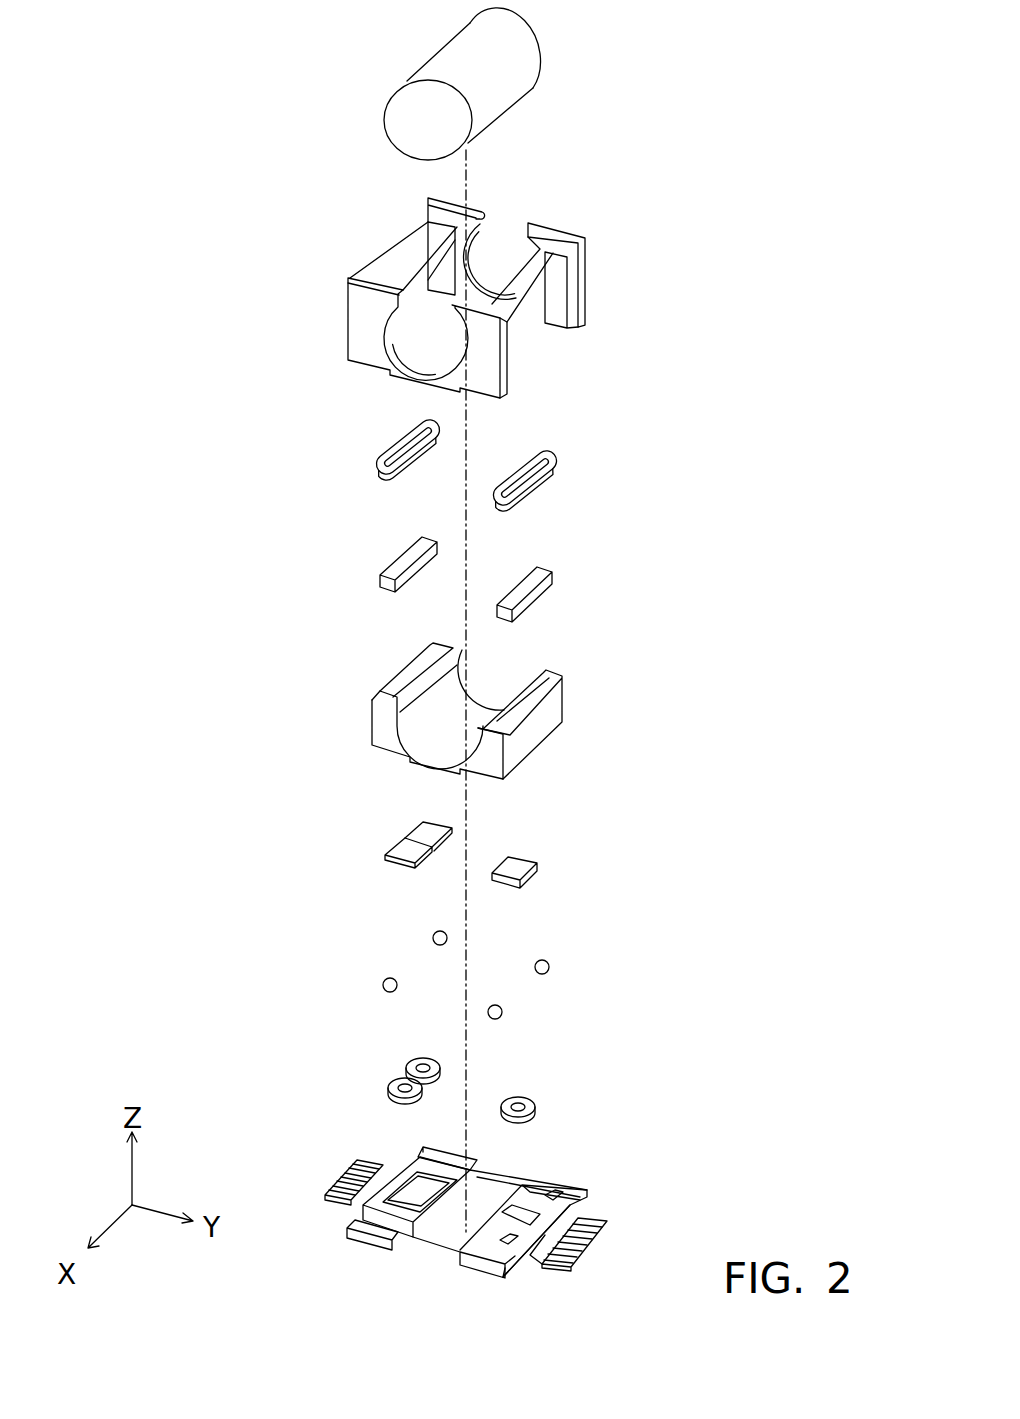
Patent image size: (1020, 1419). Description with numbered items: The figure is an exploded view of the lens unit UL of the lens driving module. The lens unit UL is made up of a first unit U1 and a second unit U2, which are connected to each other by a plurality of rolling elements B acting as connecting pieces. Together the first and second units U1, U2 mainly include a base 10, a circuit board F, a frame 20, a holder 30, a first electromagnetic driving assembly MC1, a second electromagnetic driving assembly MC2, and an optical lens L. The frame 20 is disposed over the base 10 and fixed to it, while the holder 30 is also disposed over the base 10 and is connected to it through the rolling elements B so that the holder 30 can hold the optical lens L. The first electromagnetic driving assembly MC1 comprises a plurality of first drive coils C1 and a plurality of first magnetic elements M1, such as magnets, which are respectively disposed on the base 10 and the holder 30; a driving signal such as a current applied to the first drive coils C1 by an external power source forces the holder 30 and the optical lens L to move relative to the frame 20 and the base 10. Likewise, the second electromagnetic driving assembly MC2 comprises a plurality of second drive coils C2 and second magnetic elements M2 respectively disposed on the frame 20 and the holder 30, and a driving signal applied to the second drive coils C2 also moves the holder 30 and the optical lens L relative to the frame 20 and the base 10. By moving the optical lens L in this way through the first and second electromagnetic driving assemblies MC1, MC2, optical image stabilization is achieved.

The lens unit UL is at (162, 118).
The optical lens L is at (420, 123).
The frame 20 is at (367, 343).
The holder 30 is at (385, 733).
The base 10 is at (375, 1228).
The circuit board F is at (352, 1178).
The second electromagnetic driving assembly MC2 is at (178, 421).
The first electromagnetic driving assembly MC1 is at (178, 797).
The second drive coil C2 is at (403, 433).
The second magnetic element M2 is at (403, 556).
The first magnetic element M1 is at (397, 852).
The first drive coil C1 is at (390, 1086).
The rolling element B is at (386, 979).
The second unit U2 is at (676, 22).
The first unit U1 is at (676, 1070).